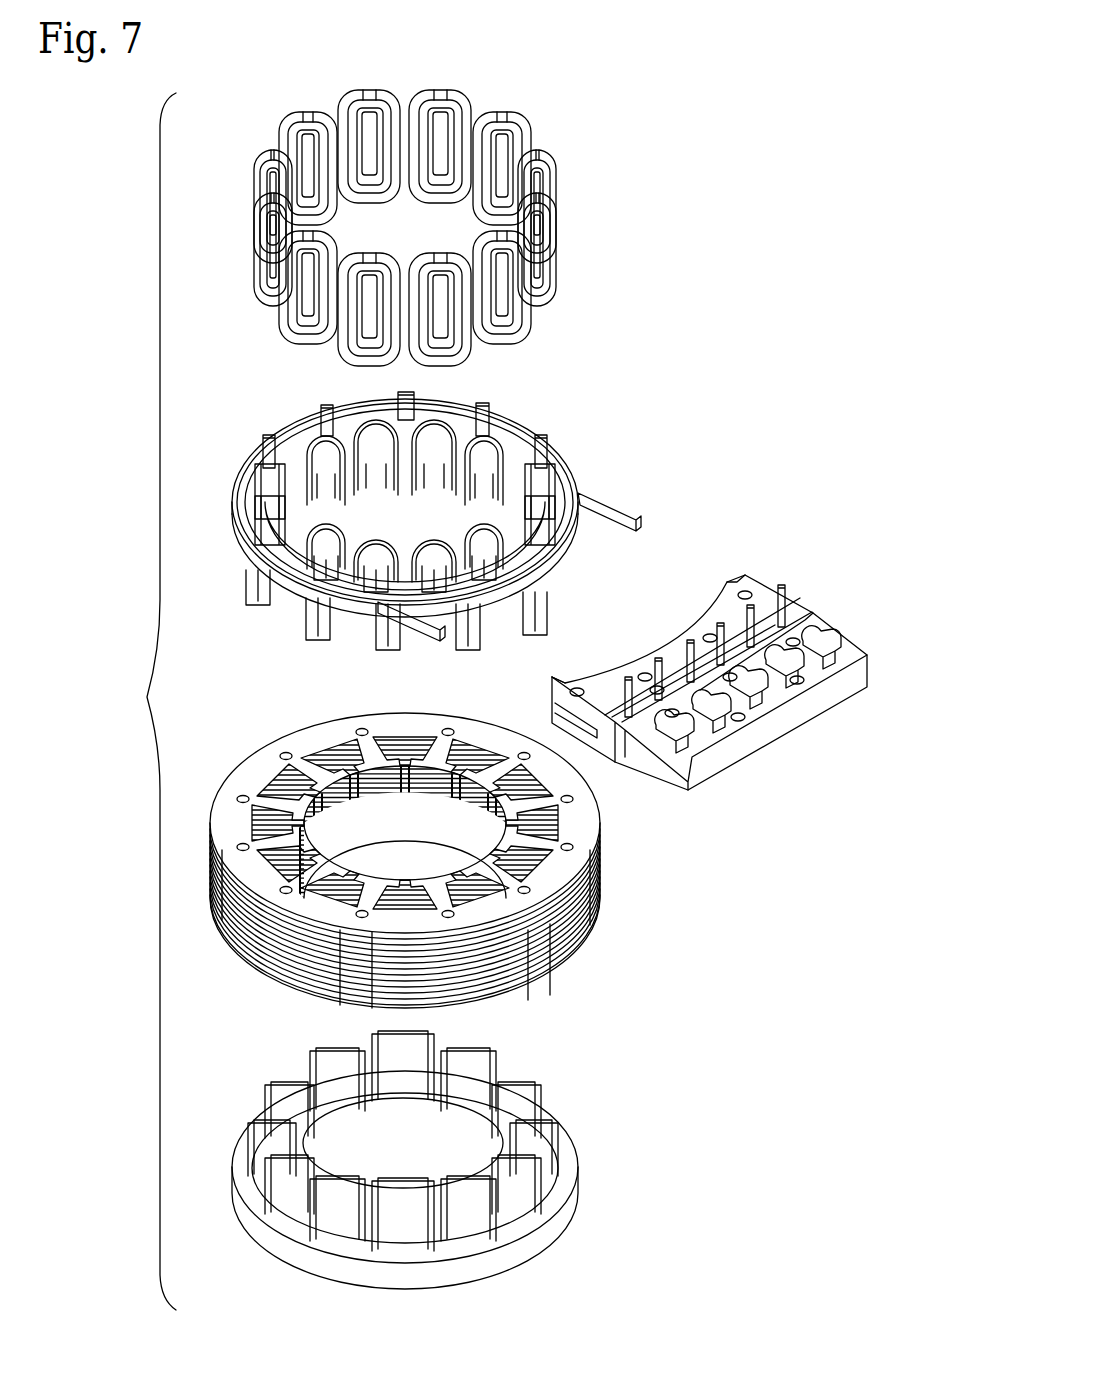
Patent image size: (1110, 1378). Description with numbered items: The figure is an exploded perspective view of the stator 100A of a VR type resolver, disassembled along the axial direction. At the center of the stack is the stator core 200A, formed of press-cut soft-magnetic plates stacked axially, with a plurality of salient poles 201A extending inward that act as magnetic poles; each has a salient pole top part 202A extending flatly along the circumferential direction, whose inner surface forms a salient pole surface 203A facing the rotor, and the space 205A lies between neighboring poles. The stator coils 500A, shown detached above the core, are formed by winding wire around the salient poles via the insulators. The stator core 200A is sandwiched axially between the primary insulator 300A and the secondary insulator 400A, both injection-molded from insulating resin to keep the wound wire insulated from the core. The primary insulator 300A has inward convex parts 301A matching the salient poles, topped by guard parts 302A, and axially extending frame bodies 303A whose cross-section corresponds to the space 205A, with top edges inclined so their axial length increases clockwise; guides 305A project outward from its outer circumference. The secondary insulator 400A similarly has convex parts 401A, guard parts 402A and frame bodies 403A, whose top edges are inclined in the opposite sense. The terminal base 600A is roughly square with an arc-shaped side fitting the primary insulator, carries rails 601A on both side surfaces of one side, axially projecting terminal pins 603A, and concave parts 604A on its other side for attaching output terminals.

The stator 100A is at (127, 701).
The stator coil 500A is at (528, 185).
The primary insulator 300A is at (460, 527).
The convex part 301A is at (508, 562).
The guard part 302A is at (478, 548).
The frame body 303A is at (468, 612).
The guide 305A is at (612, 506).
The terminal base 600A is at (725, 650).
The rail 601A is at (592, 702).
The terminal pin 603A is at (783, 583).
The concave part 604A is at (823, 636).
The stator core 200A is at (456, 841).
The salient pole 201A is at (446, 740).
The salient pole top part 202A is at (406, 736).
The salient pole surface 203A is at (432, 806).
The space 205A is at (336, 748).
The secondary insulator 400A is at (447, 1158).
The convex part 401A is at (420, 1052).
The guard part 402A is at (432, 1112).
The frame body 403A is at (496, 1220).